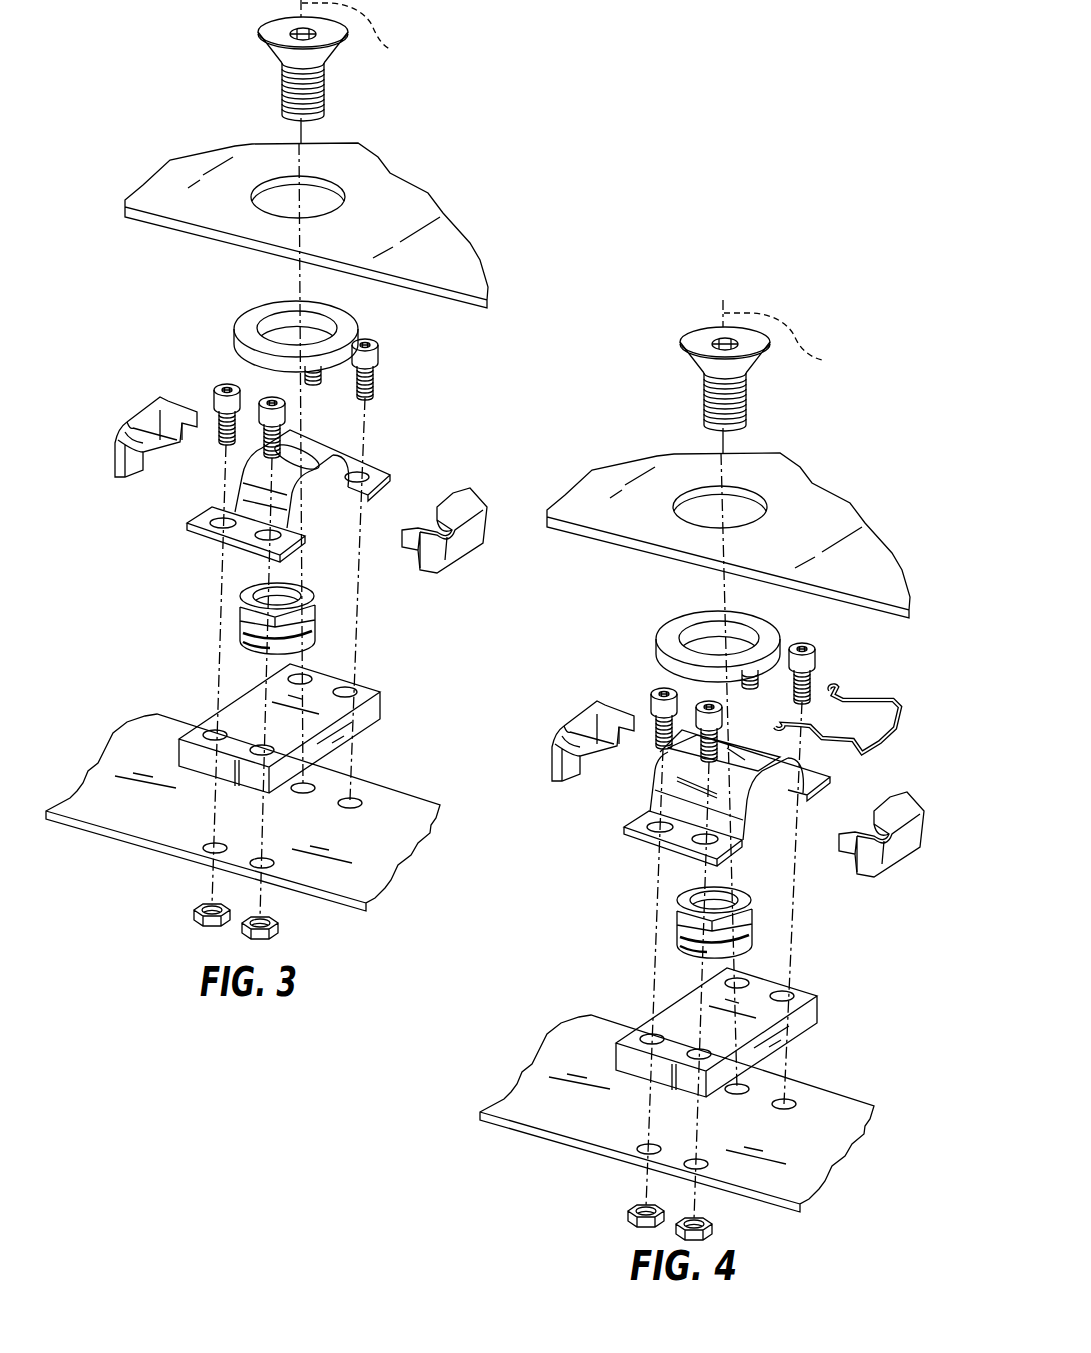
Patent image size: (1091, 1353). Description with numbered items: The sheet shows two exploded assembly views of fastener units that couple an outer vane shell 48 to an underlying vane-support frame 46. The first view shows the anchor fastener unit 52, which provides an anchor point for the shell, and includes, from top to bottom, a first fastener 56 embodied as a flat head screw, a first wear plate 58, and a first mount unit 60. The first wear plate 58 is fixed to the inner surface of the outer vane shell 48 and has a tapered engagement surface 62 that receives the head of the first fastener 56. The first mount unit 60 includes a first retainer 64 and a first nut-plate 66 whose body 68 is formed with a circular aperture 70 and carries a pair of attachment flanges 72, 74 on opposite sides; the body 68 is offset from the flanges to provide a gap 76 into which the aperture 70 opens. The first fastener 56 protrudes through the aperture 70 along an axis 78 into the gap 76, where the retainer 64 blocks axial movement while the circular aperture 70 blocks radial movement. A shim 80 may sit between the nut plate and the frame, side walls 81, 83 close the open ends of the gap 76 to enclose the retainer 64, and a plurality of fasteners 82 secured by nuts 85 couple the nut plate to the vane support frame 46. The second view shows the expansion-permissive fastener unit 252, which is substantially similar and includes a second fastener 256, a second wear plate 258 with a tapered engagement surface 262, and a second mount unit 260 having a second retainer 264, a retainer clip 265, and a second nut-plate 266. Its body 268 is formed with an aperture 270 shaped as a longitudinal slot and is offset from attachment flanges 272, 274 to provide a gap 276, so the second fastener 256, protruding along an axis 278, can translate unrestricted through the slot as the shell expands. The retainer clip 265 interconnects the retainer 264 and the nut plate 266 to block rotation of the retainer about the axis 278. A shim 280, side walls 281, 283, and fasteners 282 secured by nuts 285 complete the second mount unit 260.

In FIG. 3, the vane-support frame 46 is at (113, 806).
In FIG. 4, the vane-support frame 46 is at (548, 1107).
In FIG. 3, the outer vane shell 48 is at (388, 203).
In FIG. 4, the outer vane shell 48 is at (820, 520).
In FIG. 3, the anchor fastener unit 52 is at (293, 469).
In FIG. 3, the first fastener 56 is at (255, 68).
In FIG. 3, the first wear plate 58 is at (245, 315).
In FIG. 3, the first mount unit 60 is at (293, 486).
In FIG. 3, the tapered engagement surface 62 is at (280, 323).
In FIG. 3, the first retainer 64 is at (225, 616).
In FIG. 3, the first nut-plate 66 is at (117, 413).
In FIG. 3, the body 68 is at (289, 531).
In FIG. 3, the aperture 70 is at (330, 470).
In FIG. 3, the attachment flange 72 is at (194, 536).
In FIG. 3, the attachment flange 74 is at (405, 476).
In FIG. 3, the gap 76 is at (315, 502).
In FIG. 3, the axis 78 is at (359, 33).
In FIG. 3, the shim 80 is at (392, 692).
In FIG. 3, the side wall 81 is at (113, 426).
In FIG. 3, the fasteners 82 is at (212, 378).
In FIG. 3, the side wall 83 is at (485, 502).
In FIG. 3, the nuts 85 is at (188, 895).
In FIG. 4, the expansion-permissive fastener unit 252 is at (712, 764).
In FIG. 4, the second fastener 256 is at (683, 387).
In FIG. 4, the second wear plate 258 is at (670, 623).
In FIG. 4, the second mount unit 260 is at (712, 784).
In FIG. 4, the tapered engagement surface 262 is at (712, 633).
In FIG. 4, the second retainer 264 is at (665, 918).
In FIG. 4, the retainer clip 265 is at (900, 693).
In FIG. 4, the second nut-plate 266 is at (549, 717).
In FIG. 4, the body 268 is at (719, 834).
In FIG. 4, the aperture 270 is at (773, 778).
In FIG. 4, the attachment flange 272 is at (628, 837).
In FIG. 4, the attachment flange 274 is at (837, 773).
In FIG. 4, the gap 276 is at (767, 805).
In FIG. 4, the axis 278 is at (794, 344).
In FIG. 4, the shim 280 is at (832, 998).
In FIG. 4, the side wall 281 is at (547, 728).
In FIG. 4, the fasteners 282 is at (647, 680).
In FIG. 4, the side wall 283 is at (913, 800).
In FIG. 4, the nuts 285 is at (623, 1198).